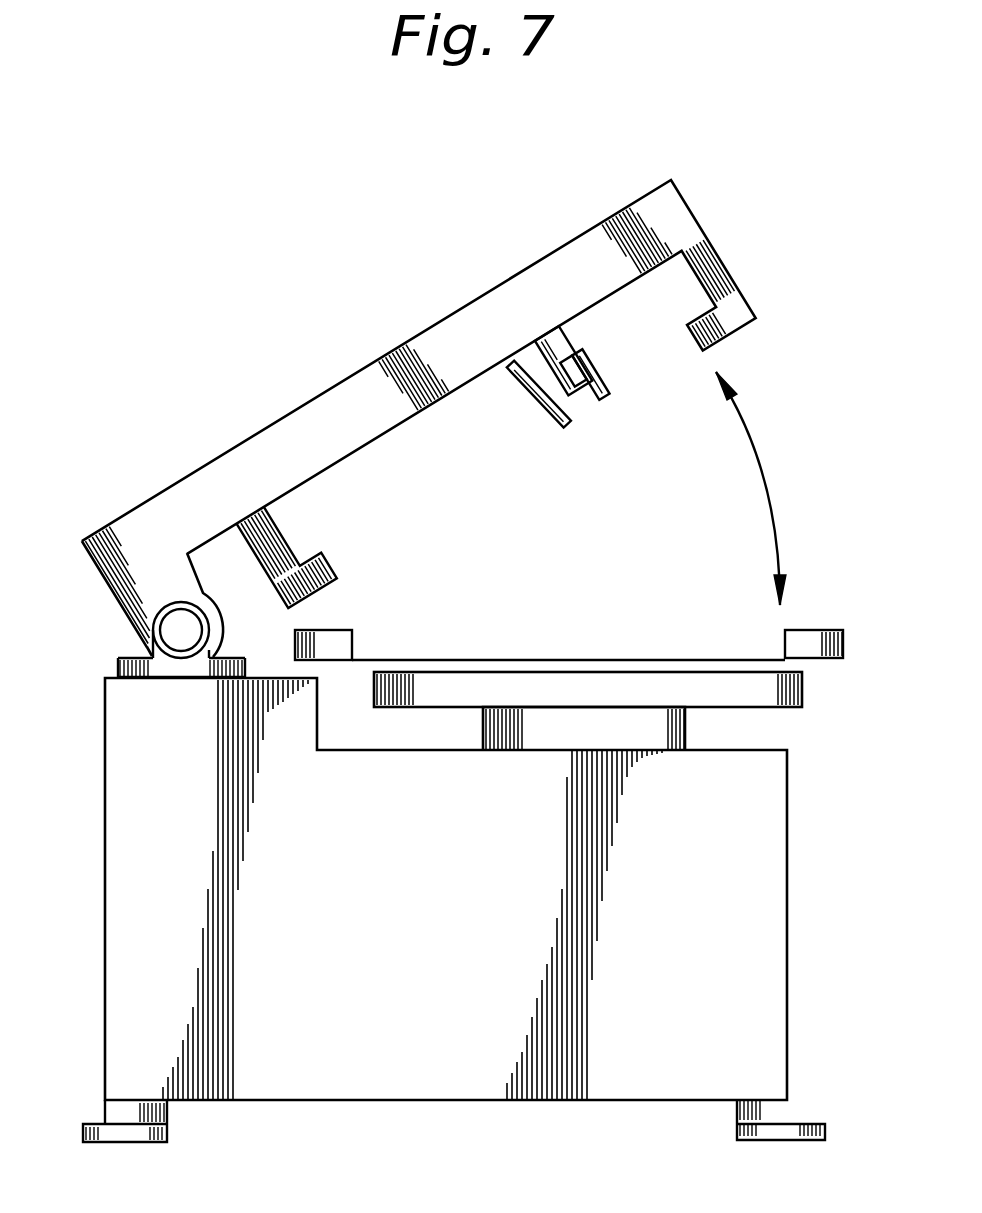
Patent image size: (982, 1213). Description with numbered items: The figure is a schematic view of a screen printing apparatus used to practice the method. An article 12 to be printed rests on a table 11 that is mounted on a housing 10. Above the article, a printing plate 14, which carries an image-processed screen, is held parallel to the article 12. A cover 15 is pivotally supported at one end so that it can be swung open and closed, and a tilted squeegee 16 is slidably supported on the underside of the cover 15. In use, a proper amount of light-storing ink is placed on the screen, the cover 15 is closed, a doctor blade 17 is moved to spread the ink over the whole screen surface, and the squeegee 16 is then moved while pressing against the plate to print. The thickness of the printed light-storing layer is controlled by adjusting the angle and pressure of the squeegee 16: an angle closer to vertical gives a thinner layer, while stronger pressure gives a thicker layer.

The housing 10 is at (762, 955).
The table 11 is at (528, 741).
The article 12 is at (412, 690).
The printing plate 14 is at (815, 658).
The cover 15 is at (462, 321).
The squeegee 16 is at (612, 383).
The doctor blade 17 is at (557, 426).